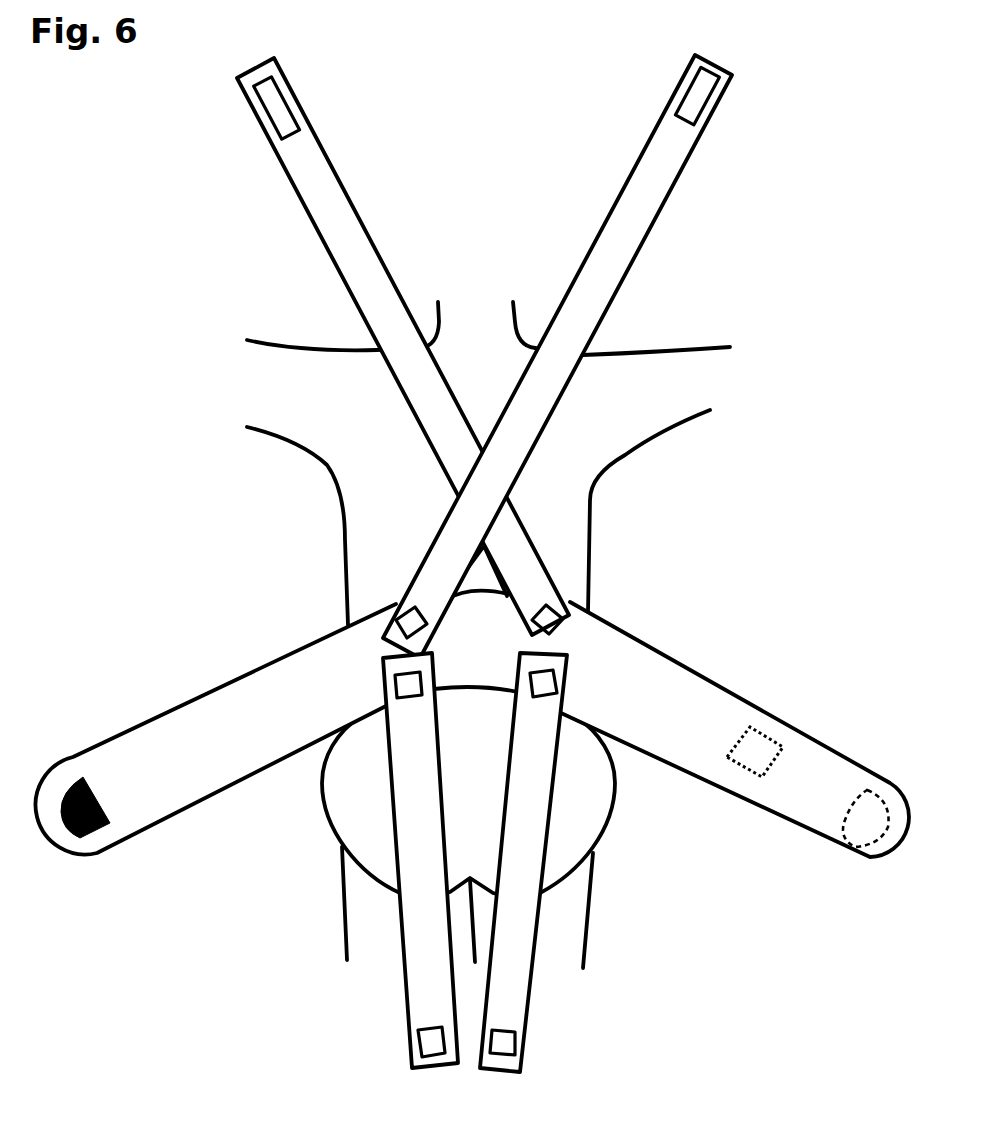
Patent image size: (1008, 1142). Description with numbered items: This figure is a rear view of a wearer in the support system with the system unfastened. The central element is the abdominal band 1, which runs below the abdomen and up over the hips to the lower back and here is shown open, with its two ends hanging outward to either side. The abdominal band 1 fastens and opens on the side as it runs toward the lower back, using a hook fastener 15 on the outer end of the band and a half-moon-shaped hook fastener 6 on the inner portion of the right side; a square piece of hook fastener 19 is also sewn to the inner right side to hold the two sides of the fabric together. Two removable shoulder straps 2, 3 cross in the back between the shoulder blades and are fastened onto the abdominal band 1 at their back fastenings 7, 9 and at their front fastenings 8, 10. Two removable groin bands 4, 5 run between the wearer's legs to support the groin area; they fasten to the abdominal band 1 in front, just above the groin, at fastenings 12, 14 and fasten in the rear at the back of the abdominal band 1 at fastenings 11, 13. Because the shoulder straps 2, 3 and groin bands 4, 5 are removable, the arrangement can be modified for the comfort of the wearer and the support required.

The abdominal band 1 is at (237, 688).
The shoulder strap 2 is at (342, 248).
The shoulder strap 3 is at (618, 253).
The groin band 4 is at (420, 940).
The groin band 5 is at (523, 943).
The half-moon-shaped hook fastener 6 is at (862, 832).
The back fastening of shoulder strap 7 is at (400, 626).
The front fastening of shoulder strap 8 is at (280, 112).
The back fastening of shoulder strap 9 is at (573, 622).
The front fastening of shoulder strap 10 is at (715, 105).
The rear groin band fastening 11 is at (385, 702).
The front groin band fastening 12 is at (417, 1044).
The rear groin band fastening 13 is at (560, 706).
The front groin band fastening 14 is at (527, 1044).
The hook fastener 15 is at (80, 840).
The square hook fastener 19 is at (760, 737).